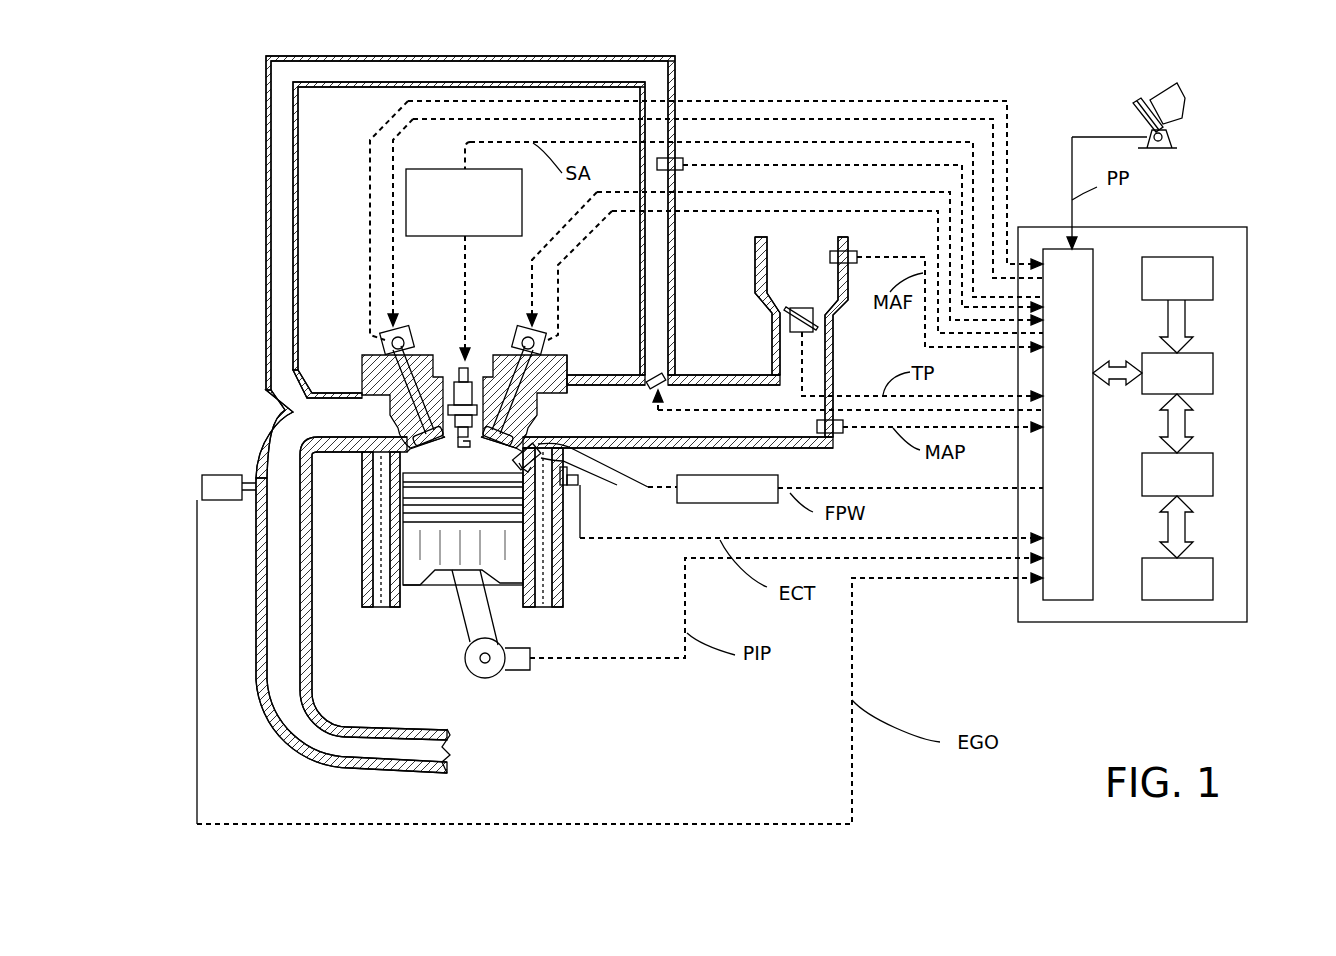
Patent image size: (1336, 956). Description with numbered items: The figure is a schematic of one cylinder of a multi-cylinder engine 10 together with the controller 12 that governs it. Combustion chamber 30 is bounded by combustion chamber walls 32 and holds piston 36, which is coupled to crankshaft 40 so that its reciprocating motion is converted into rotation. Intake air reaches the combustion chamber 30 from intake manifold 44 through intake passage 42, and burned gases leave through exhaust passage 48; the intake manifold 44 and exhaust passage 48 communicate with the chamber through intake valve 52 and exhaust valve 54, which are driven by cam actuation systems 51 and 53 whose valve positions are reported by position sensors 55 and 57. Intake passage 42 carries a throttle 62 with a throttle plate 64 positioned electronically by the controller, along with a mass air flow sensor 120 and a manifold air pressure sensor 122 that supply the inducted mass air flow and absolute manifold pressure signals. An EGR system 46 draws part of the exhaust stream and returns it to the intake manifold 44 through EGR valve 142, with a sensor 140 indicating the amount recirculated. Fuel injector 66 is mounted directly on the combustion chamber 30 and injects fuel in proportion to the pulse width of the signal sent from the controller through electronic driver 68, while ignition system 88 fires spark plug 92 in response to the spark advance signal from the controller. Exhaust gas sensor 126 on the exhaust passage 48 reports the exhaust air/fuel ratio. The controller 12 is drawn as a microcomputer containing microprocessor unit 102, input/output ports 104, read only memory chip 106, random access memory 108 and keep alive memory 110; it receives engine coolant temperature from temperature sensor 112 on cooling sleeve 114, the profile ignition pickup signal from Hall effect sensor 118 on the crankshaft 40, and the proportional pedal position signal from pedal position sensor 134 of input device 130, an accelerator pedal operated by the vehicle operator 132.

The engine 10 is at (343, 257).
The controller 12 is at (1233, 227).
The combustion chamber 30 is at (460, 457).
The combustion chamber walls 32 is at (402, 593).
The piston 36 is at (445, 555).
The crankshaft 40 is at (475, 680).
The intake passage 42 is at (815, 283).
The intake manifold 44 is at (745, 433).
The exhaust gas recirculation (EGR) system 46 is at (666, 273).
The exhaust passage 48 is at (338, 425).
The cam actuation system 51 is at (517, 323).
The intake valve 52 is at (507, 418).
The cam actuation system 53 is at (413, 327).
The exhaust valve 54 is at (418, 432).
The position sensor 55 is at (547, 345).
The position sensor 57 is at (382, 345).
The throttle 62 is at (807, 313).
The throttle plate 64 is at (783, 312).
The fuel injector 66 is at (595, 475).
The electronic driver 68 is at (703, 503).
The ignition system 88 is at (421, 169).
The spark plug 92 is at (470, 368).
The microprocessor unit 102 is at (1213, 365).
The input/output ports 104 is at (1093, 260).
The read only memory chip 106 is at (1213, 277).
The random access memory 108 is at (1213, 473).
The keep alive memory 110 is at (1213, 577).
The temperature sensor 112 is at (577, 483).
The cooling sleeve 114 is at (543, 558).
The Hall effect sensor 118 is at (520, 673).
The mass air flow sensor 120 is at (847, 251).
The manifold air pressure sensor 122 is at (837, 437).
The exhaust gas sensor 126 is at (202, 480).
The input device 130 is at (1133, 112).
The vehicle operator 132 is at (1183, 97).
The pedal position sensor 134 is at (1175, 137).
The sensor 140 is at (683, 168).
The EGR valve 142 is at (660, 375).